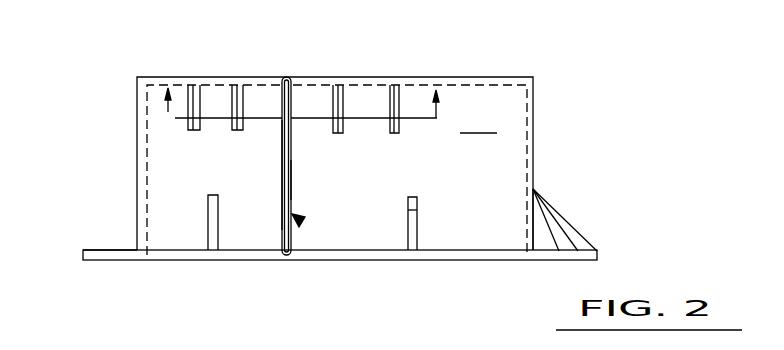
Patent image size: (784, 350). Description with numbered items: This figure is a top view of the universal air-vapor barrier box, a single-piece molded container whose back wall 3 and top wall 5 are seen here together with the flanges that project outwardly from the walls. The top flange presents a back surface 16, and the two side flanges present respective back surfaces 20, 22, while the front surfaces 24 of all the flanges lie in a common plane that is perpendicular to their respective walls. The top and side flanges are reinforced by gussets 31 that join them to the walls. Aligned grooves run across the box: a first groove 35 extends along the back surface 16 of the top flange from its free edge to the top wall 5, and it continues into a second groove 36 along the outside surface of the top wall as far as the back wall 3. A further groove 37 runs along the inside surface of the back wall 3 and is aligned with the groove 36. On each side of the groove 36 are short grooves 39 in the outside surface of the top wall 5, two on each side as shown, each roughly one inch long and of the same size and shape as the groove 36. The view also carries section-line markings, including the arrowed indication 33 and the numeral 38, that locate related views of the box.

The back wall 3 is at (358, 20).
The top wall 5 is at (478, 120).
The back surface of top flange 16 is at (245, 248).
The back surface of first side flange 20 is at (110, 248).
The back surface of second side flange 22 is at (560, 251).
The front surfaces of flanges 24 is at (190, 260).
The gussets 31 is at (537, 190).
The pin end 33 is at (299, 220).
The first groove 35 is at (285, 223).
The second groove 36 is at (288, 195).
The groove 37 is at (292, 103).
The housing 38 is at (503, 80).
The short grooves 39 is at (342, 118).